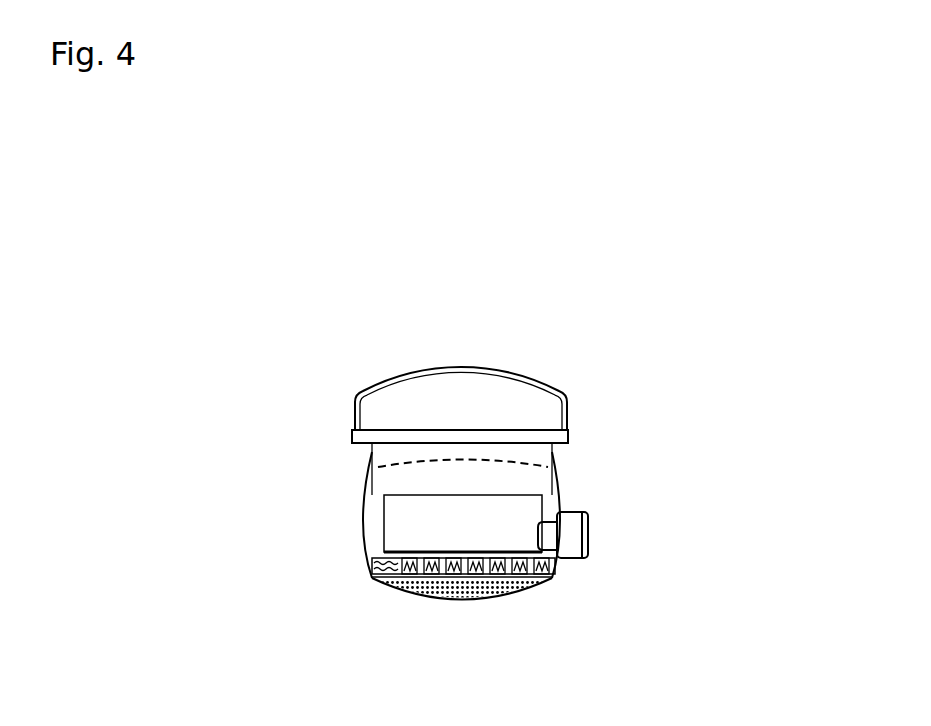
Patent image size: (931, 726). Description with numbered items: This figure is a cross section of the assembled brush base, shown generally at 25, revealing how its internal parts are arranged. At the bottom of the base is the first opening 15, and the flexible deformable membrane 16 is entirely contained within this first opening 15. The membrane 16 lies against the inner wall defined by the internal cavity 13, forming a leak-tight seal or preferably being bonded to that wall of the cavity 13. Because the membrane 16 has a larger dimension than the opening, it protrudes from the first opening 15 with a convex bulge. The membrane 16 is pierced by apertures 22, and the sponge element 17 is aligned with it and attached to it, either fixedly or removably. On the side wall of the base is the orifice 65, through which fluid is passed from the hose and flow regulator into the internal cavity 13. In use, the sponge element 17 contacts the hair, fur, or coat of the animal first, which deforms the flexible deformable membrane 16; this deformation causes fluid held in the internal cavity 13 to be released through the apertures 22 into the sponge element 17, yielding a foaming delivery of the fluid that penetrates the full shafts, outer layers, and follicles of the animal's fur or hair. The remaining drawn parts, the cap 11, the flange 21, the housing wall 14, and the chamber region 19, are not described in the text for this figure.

The brush base 25 is at (272, 214).
The cap 11 is at (543, 380).
The flange 21 is at (567, 429).
The housing 14 is at (375, 470).
The chamber 19 is at (393, 525).
The internal cavity 13 is at (552, 512).
The orifice 65 is at (588, 527).
The flexible deformable membrane 16 is at (368, 568).
The apertures 22 is at (550, 563).
The first opening 15 is at (375, 577).
The sponge element 17 is at (470, 602).